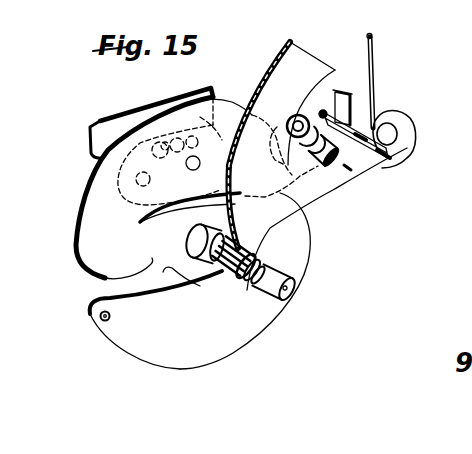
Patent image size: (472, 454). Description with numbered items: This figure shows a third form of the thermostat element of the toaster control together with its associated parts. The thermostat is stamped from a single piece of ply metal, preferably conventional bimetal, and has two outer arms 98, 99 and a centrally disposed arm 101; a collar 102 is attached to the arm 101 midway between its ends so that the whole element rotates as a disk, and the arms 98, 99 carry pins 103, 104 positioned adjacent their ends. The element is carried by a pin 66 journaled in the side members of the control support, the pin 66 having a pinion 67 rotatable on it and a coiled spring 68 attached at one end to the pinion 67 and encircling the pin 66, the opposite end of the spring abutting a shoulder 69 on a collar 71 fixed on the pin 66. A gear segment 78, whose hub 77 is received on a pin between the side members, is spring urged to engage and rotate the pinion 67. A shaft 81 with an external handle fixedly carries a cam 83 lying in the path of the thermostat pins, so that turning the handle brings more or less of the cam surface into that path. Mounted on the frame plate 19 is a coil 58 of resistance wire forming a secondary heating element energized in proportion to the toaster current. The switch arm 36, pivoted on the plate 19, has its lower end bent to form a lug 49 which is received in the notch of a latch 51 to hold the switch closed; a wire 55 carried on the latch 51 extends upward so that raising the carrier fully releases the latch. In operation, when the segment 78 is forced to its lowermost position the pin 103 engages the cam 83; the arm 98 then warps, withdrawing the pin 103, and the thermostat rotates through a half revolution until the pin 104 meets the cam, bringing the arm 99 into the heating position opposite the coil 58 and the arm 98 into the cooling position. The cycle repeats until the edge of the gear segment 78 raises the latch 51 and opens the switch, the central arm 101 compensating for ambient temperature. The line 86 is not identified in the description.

The frame plate 19 is at (105, 122).
The switch arm 36 is at (347, 92).
The lug 49 is at (352, 122).
The latch 51 is at (375, 160).
The wire 55 is at (375, 42).
The coil 58 is at (169, 165).
The pin 66 is at (291, 297).
The pinion 67 is at (220, 280).
The coiled spring 68 is at (261, 268).
The shoulder 69 is at (247, 292).
The collar 71 is at (313, 261).
The hub 77 is at (405, 121).
The gear segment 78 is at (311, 113).
The shaft 81 is at (345, 170).
The cam 83 is at (300, 122).
The arc edge 86 is at (317, 52).
The arm 98 is at (229, 102).
The arm 99 is at (215, 349).
The centrally disposed arm 101 is at (120, 279).
The collar 102 is at (187, 237).
The pin 103 is at (334, 189).
The pin 104 is at (102, 321).